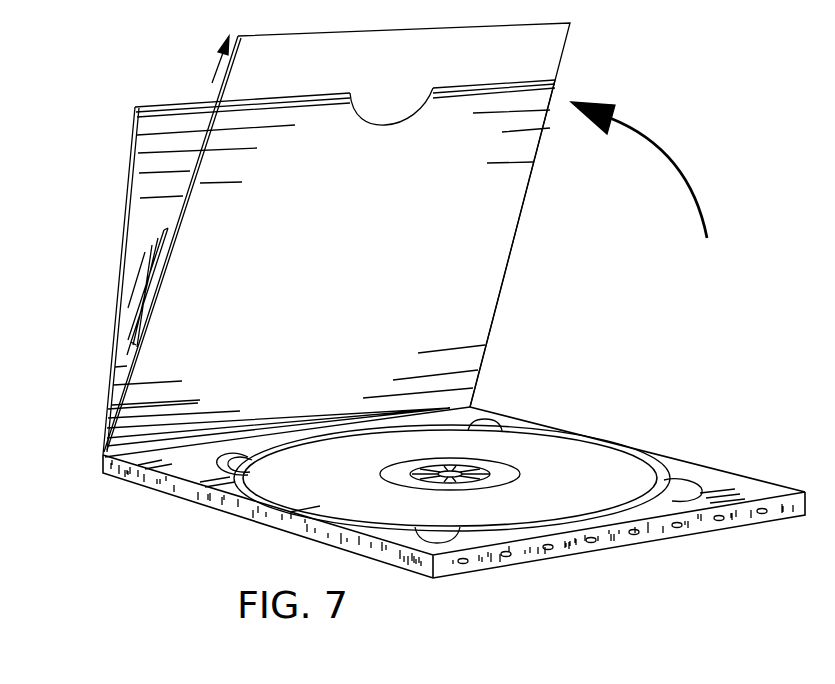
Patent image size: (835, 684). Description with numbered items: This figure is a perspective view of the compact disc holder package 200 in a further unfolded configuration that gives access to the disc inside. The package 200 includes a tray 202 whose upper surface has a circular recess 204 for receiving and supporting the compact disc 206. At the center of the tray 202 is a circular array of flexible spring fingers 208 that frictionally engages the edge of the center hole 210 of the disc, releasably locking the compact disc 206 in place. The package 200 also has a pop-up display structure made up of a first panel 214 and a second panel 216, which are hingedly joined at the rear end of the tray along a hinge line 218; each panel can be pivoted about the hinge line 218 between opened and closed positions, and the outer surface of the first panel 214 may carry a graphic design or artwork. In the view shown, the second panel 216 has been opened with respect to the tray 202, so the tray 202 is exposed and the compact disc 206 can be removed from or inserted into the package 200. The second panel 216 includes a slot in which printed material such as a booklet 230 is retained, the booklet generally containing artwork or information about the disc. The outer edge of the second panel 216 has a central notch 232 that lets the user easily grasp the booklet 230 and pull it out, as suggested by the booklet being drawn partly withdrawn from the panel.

The package 200 is at (655, 321).
The tray 202 is at (733, 477).
The circular recess 204 is at (670, 467).
The compact disc 206 is at (587, 448).
The flexible spring fingers 208 is at (462, 478).
The center hole 210 is at (423, 478).
The first panel 214 is at (138, 226).
The second panel 216 is at (486, 291).
The hinge line 218 is at (164, 448).
The booklet 230 is at (547, 33).
The central notch 232 is at (431, 95).